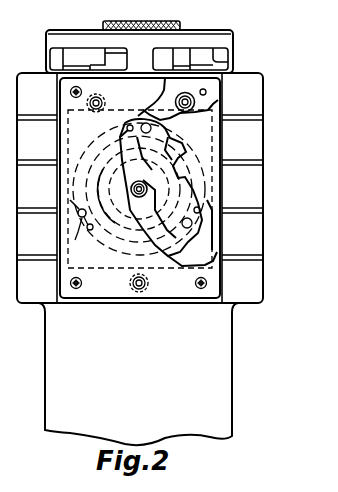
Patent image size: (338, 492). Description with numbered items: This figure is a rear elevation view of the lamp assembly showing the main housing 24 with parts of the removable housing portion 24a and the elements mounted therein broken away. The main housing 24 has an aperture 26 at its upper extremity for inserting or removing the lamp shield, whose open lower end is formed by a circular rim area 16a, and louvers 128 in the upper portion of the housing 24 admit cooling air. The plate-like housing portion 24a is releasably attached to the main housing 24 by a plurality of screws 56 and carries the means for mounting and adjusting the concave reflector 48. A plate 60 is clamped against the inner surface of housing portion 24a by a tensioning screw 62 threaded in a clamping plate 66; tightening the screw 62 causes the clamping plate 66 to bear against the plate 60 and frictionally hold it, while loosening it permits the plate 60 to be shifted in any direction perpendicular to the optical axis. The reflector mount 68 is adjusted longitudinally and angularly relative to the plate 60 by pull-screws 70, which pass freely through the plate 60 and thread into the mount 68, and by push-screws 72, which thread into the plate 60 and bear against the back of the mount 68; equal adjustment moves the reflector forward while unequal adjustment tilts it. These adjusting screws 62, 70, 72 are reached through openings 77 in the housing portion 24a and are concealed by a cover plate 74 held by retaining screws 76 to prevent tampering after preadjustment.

The aperture 26 is at (75, 25).
The rim area 16a is at (181, 27).
The louvers 128 is at (232, 53).
The cover plate 74 is at (68, 143).
The retaining screws 76 is at (207, 283).
The screws 56 is at (149, 283).
The clamping plate 66 is at (167, 182).
The tensioning screw 62 is at (128, 201).
The concave reflector 48 is at (184, 176).
The plate 60 is at (174, 135).
The reflector mount 68 is at (189, 151).
The openings 77 is at (136, 115).
The pull-screws 70 is at (79, 208).
The push-screws 72 is at (91, 230).
The housing portion 24a is at (212, 238).
The main housing 24 is at (148, 349).